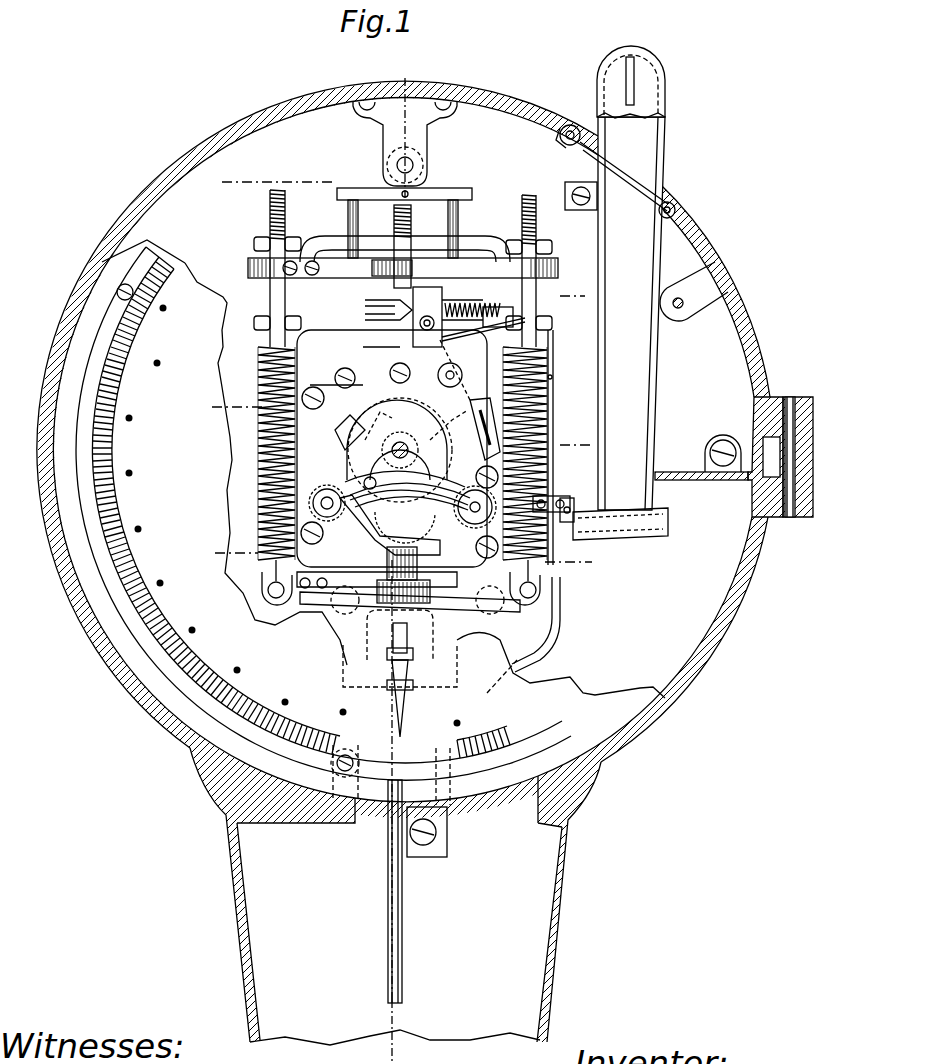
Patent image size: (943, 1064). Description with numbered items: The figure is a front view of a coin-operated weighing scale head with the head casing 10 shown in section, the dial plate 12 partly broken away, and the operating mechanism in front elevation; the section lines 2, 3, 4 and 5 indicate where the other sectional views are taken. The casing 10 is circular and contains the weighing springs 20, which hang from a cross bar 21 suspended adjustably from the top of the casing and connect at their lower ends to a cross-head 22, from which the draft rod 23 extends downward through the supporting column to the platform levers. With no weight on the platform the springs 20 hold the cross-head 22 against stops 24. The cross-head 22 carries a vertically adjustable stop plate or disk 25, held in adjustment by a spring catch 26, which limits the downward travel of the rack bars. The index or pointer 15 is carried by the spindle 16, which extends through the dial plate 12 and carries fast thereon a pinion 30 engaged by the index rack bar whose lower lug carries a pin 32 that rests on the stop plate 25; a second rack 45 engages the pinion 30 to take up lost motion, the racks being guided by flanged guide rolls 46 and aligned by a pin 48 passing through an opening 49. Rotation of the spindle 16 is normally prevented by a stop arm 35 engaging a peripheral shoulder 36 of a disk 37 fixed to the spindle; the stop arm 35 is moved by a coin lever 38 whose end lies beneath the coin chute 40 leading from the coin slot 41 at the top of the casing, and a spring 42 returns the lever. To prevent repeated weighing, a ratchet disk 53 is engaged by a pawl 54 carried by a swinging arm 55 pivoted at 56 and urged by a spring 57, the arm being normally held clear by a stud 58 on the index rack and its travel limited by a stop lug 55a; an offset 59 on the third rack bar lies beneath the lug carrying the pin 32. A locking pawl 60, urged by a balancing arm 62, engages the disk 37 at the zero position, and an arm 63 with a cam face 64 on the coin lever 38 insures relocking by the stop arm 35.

The section line 2 is at (405, 125).
The section line 3 is at (398, 233).
The section line 4 is at (394, 422).
The section line 5 is at (404, 556).
The head casing 10 is at (160, 178).
The dial plate 12 is at (140, 610).
The index or pointer 15 is at (397, 715).
The spindle 16 is at (397, 454).
The weighing springs 20 is at (555, 412).
The cross bar 21 is at (332, 238).
The cross-head 22 is at (463, 635).
The draft rod 23 is at (404, 927).
The stops 24 is at (270, 606).
The stop plate or disk 25 is at (430, 600).
The spring catch 26 is at (372, 612).
The pinion 30 is at (399, 450).
The pin 32 is at (385, 545).
The stop arm 35 is at (455, 508).
The peripheral shoulder 36 is at (455, 440).
The disk 37 is at (377, 426).
The coin lever 38 is at (538, 507).
The coin chute 40 is at (642, 293).
The coin slot 41 is at (634, 82).
The spring 42 is at (553, 350).
The second rack 45 is at (406, 488).
The flanged guide rolls 46 is at (405, 370).
The pin 48 is at (430, 317).
The opening 49 is at (423, 322).
The ratchet wheel or disk 53 is at (357, 408).
The pawl 54 is at (482, 474).
The swinging arm 55 is at (470, 420).
The stop lug 55a is at (530, 323).
The pivot 56 is at (477, 319).
The spring 57 is at (472, 305).
The arm or stud 58 is at (553, 378).
The offset 59 is at (377, 573).
The locking pawl 60 is at (338, 447).
The balancing arm 62 is at (331, 511).
The arm 63 is at (455, 511).
The cam face 64 is at (401, 525).